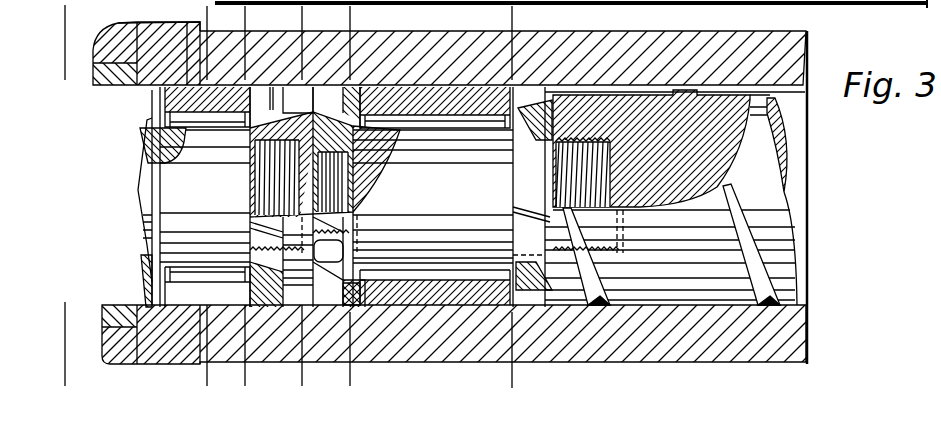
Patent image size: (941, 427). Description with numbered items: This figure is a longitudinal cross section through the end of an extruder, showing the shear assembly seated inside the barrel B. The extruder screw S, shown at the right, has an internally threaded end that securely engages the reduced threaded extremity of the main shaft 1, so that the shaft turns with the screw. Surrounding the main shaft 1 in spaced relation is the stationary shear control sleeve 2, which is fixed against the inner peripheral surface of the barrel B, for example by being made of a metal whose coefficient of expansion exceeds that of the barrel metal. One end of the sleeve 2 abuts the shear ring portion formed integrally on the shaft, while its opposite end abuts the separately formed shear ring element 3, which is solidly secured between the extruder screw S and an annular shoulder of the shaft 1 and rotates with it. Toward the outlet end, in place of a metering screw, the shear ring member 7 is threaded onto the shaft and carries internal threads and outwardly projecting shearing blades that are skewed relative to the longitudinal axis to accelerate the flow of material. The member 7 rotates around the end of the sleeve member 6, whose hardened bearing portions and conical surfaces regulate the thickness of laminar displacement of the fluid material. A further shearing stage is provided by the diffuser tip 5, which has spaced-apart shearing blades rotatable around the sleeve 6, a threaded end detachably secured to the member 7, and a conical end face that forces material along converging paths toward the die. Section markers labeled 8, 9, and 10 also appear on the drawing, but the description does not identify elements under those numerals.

The main shaft 1 is at (465, 307).
The stationary shear control sleeve 2 is at (465, 87).
The shear ring element 3 is at (601, 94).
The diffuser tip 5 is at (138, 140).
The sleeve member 6 is at (190, 22).
The shear ring member 7 is at (304, 110).
The section line 8 is at (260, 376).
The section line 9 is at (222, 376).
The section line 10 is at (80, 376).
The barrel B is at (797, 36).
The extruder screw S is at (778, 237).